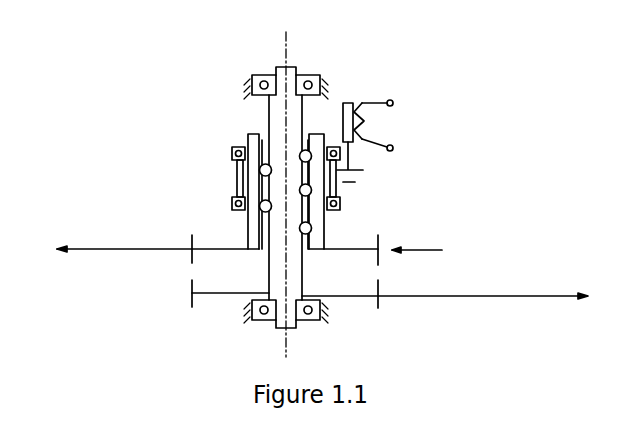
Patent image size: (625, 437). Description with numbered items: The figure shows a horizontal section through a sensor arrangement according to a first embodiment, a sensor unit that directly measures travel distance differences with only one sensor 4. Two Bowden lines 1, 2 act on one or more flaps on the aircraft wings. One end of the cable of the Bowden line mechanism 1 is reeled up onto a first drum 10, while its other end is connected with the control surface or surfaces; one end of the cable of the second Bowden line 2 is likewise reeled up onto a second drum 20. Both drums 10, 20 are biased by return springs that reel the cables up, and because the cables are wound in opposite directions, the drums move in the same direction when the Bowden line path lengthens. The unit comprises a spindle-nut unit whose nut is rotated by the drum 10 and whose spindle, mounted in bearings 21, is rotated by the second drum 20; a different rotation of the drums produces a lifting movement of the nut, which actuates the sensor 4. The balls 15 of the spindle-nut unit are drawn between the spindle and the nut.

The Bowden line 1 is at (92, 240).
The second Bowden line 2 is at (528, 310).
The sensor 4 is at (390, 127).
The first drum 10 is at (446, 250).
The rolling balls 15 is at (261, 168).
The second drum 20 is at (175, 306).
The bearings 21 is at (307, 72).